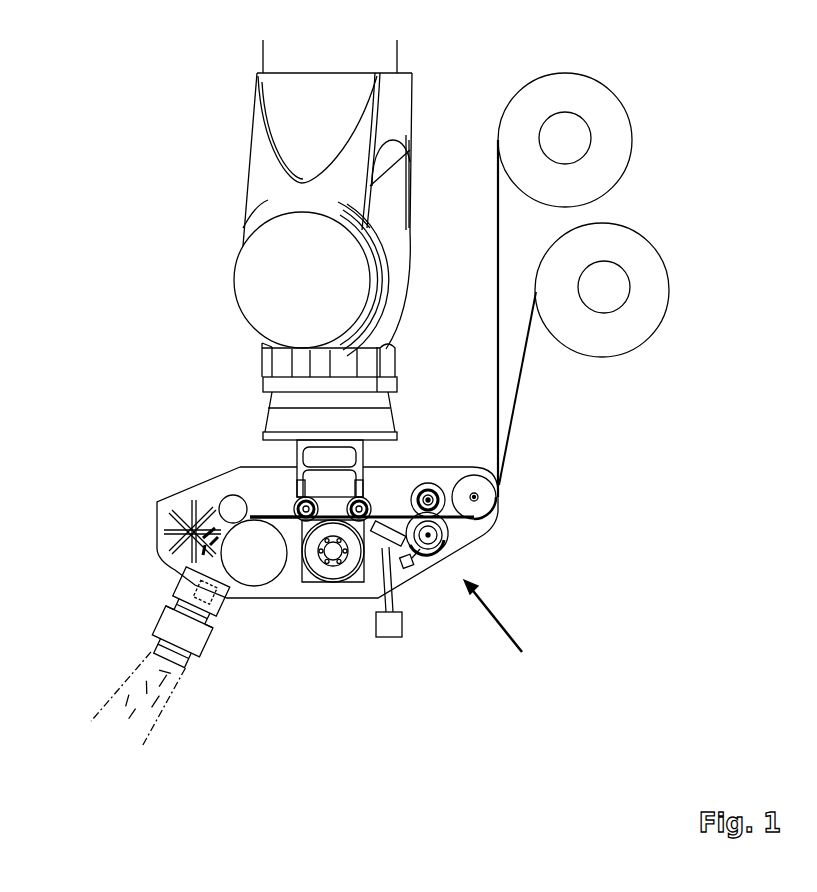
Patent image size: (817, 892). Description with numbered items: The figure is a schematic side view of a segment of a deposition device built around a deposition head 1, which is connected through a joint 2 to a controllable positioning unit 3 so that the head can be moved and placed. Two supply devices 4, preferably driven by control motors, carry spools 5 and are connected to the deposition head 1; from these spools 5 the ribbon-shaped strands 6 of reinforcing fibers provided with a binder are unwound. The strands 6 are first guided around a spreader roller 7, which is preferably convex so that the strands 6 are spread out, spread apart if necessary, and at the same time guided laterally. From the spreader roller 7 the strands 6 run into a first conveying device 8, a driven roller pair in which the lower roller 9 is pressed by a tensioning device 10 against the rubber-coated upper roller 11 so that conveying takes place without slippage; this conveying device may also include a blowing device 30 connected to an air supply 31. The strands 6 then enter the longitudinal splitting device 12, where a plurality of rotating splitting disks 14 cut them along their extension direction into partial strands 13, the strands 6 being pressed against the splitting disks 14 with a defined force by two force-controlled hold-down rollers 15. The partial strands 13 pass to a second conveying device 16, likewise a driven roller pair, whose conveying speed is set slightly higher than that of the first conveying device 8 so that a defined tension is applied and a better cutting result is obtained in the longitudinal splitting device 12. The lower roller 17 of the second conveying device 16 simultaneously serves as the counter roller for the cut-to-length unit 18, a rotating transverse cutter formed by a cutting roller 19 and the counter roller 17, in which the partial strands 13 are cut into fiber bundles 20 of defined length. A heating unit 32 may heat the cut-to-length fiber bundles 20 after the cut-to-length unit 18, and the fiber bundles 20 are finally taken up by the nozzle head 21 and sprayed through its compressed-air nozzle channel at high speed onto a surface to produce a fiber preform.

The deposition head 1 is at (507, 637).
The joint 2 is at (378, 272).
The controllable positioning unit 3 is at (257, 128).
The supply device 4 is at (567, 141).
The spool 5 is at (607, 108).
The ribbon-shaped strand 6 is at (494, 297).
The spreader roller 7 is at (480, 501).
The first conveying device 8 is at (438, 493).
The lower roller 9 is at (432, 562).
The tensioning device 10 is at (411, 566).
The upper roller 11 is at (433, 497).
The longitudinal splitting device 12 is at (337, 580).
The partial strand 13 is at (277, 518).
The splitting disk 14 is at (327, 573).
The hold-down roller 15 is at (297, 503).
The second conveying device 16 is at (233, 508).
The lower roller / counter roller 17 is at (256, 558).
The cut-to-length unit 18 is at (183, 533).
The cutting roller 19 is at (168, 514).
The fiber bundle 20 is at (190, 564).
The nozzle head 21 is at (188, 626).
The blowing device 30 is at (397, 560).
The air supply 31 is at (390, 637).
The heating unit 32 is at (223, 613).